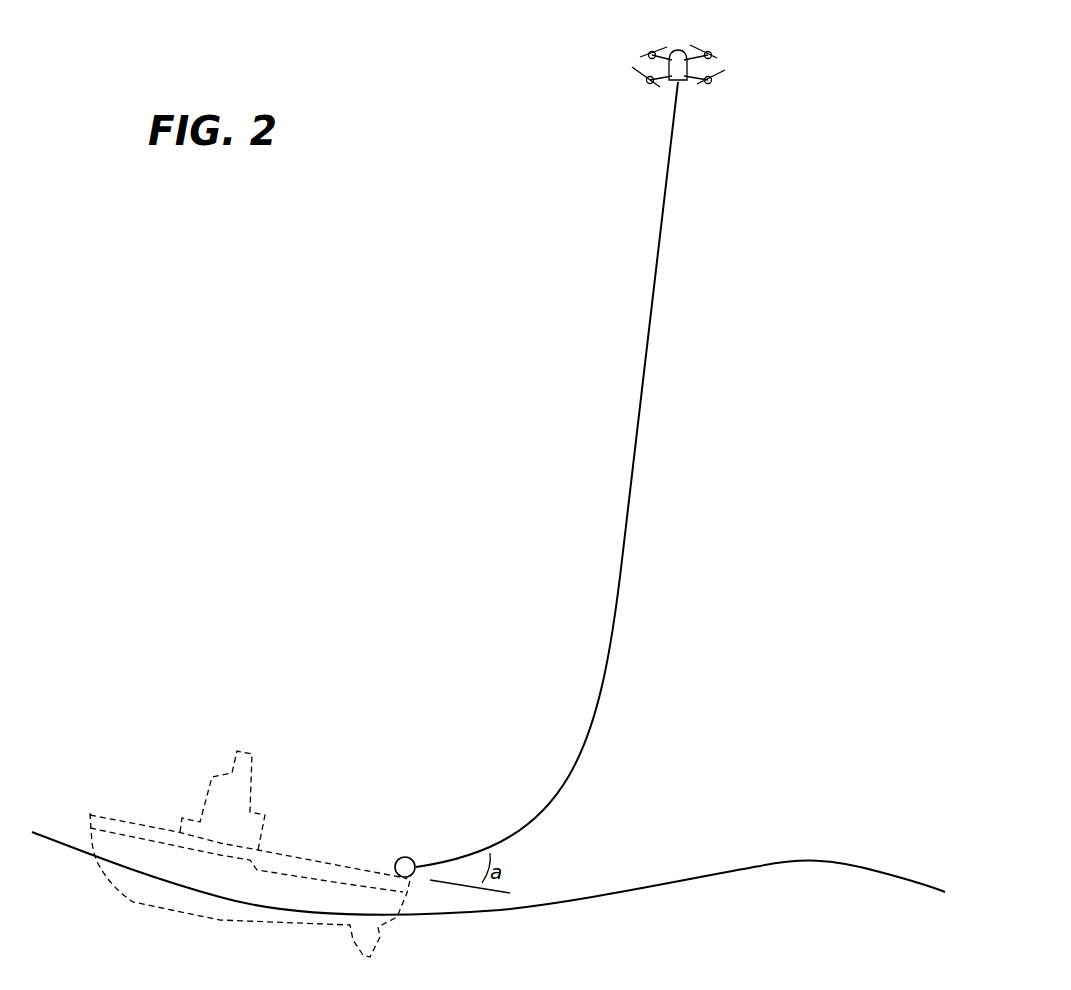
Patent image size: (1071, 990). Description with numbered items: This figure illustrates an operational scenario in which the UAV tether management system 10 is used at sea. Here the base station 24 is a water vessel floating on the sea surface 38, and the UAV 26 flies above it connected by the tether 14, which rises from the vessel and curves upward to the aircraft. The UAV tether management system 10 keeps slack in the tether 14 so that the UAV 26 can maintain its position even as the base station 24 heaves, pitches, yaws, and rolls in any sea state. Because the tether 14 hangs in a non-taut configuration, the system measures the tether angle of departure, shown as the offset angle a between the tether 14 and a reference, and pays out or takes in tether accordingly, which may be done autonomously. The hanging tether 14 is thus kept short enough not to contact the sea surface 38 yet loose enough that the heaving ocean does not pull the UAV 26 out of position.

The UAV tether management system 10 is at (403, 848).
The tether 14 is at (645, 370).
The base station 24 is at (212, 777).
The UAV 26 is at (655, 85).
The sea surface 38 is at (757, 868).